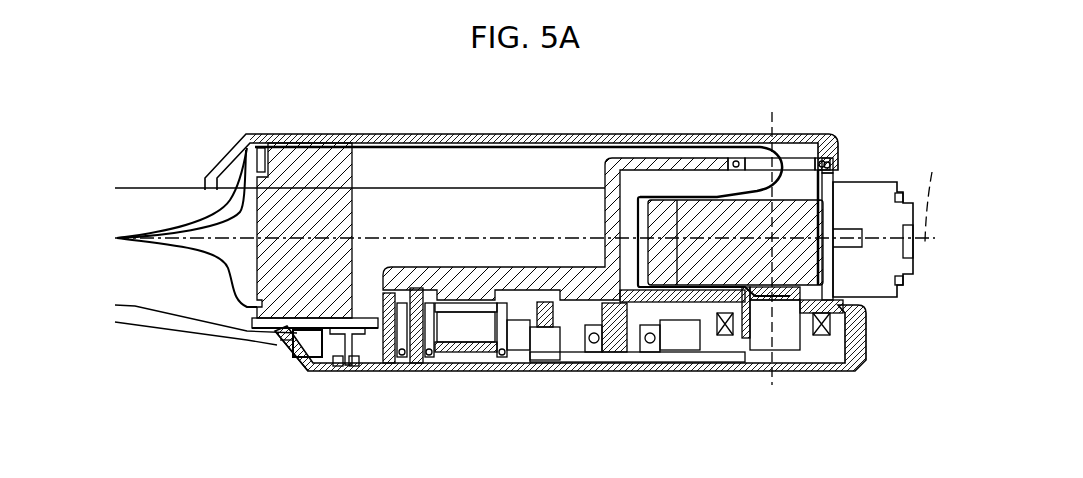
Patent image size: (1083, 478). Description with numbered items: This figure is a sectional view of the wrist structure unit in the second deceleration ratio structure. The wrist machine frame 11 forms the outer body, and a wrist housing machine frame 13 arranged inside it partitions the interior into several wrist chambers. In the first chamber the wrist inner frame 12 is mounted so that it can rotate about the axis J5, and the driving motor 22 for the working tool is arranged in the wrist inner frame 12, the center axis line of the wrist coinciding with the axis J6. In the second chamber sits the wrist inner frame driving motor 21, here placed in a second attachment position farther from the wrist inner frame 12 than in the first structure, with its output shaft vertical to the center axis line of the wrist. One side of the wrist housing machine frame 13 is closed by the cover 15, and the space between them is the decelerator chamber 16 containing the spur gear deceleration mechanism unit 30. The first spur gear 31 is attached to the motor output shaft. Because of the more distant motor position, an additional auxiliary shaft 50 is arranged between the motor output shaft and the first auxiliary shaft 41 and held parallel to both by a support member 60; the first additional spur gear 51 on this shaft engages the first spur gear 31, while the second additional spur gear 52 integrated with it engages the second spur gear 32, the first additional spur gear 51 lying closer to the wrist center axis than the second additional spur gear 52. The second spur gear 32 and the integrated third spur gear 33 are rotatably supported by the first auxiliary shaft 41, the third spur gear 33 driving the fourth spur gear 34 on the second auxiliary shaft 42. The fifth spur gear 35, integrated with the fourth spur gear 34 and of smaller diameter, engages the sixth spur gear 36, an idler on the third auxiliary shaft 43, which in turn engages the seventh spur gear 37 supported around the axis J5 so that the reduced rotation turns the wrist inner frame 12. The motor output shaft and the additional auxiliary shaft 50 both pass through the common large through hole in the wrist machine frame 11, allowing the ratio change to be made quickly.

The wrist machine frame 11 is at (393, 134).
The wrist inner frame 12 is at (677, 188).
The wrist housing machine frame 13 is at (618, 210).
The cover 15 is at (278, 355).
The decelerator chamber 16 is at (300, 357).
The wrist inner frame driving motor 21 is at (325, 215).
The driving motor 22 is at (830, 190).
The spur gear deceleration mechanism unit 30 is at (570, 374).
The first spur gear 31 is at (307, 355).
The second spur gear 32 is at (450, 353).
The third spur gear 33 is at (388, 353).
The fourth spur gear 34 is at (467, 347).
The fifth spur gear 35 is at (488, 347).
The sixth spur gear 36 is at (674, 340).
The seventh spur gear 37 is at (833, 355).
The first auxiliary shaft 41 is at (417, 353).
The second auxiliary shaft 42 is at (513, 345).
The third auxiliary shaft 43 is at (616, 340).
The additional auxiliary shaft 50 is at (345, 367).
The first additional spur gear 51 is at (298, 335).
The second additional spur gear 52 is at (338, 362).
The support member 60 is at (373, 345).
The axis J5 is at (774, 236).
The axis J6 is at (932, 196).